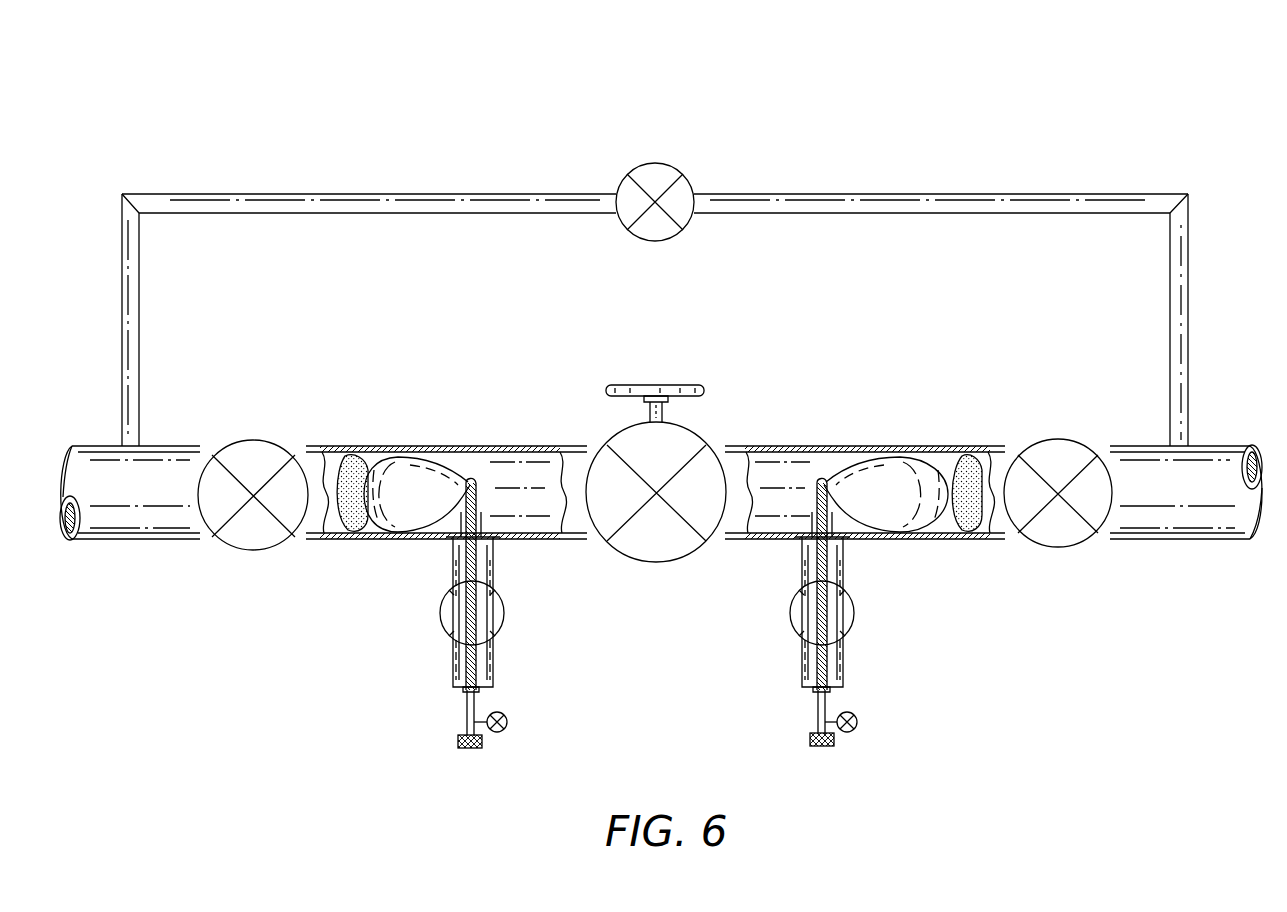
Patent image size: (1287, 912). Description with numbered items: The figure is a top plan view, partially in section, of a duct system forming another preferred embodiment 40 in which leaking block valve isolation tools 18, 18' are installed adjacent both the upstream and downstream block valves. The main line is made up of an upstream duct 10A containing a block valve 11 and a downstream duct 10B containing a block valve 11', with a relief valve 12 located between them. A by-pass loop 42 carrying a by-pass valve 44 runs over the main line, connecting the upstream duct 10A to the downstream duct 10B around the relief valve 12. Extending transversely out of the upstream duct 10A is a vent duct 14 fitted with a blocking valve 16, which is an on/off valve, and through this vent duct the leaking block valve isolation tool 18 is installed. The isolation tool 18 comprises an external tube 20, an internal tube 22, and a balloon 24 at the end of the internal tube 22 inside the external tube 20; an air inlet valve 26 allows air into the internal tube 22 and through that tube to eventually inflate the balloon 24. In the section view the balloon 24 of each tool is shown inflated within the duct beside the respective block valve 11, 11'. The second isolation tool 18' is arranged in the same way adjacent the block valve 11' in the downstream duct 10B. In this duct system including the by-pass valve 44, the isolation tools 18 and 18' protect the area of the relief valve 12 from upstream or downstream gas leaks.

The preferred embodiment 40 is at (873, 75).
The bypass pipe loop 42 is at (465, 193).
The by-pass valve 44 is at (668, 180).
The upstream duct 10A is at (190, 518).
The pipeline downstream section 10B is at (1183, 515).
The block valve 11 is at (264, 537).
The block valve 11' is at (1058, 537).
The relief valve 12 is at (665, 548).
The vent duct 14 is at (456, 550).
The blocking valve 16 is at (442, 617).
The leaking block valve isolation tool 18 is at (450, 638).
The leaking block valve isolation tool 18' is at (883, 612).
The external tube 20 is at (480, 694).
The internal tube 22 is at (462, 720).
The balloon 24 is at (418, 490).
The air inlet valve 26 is at (500, 735).